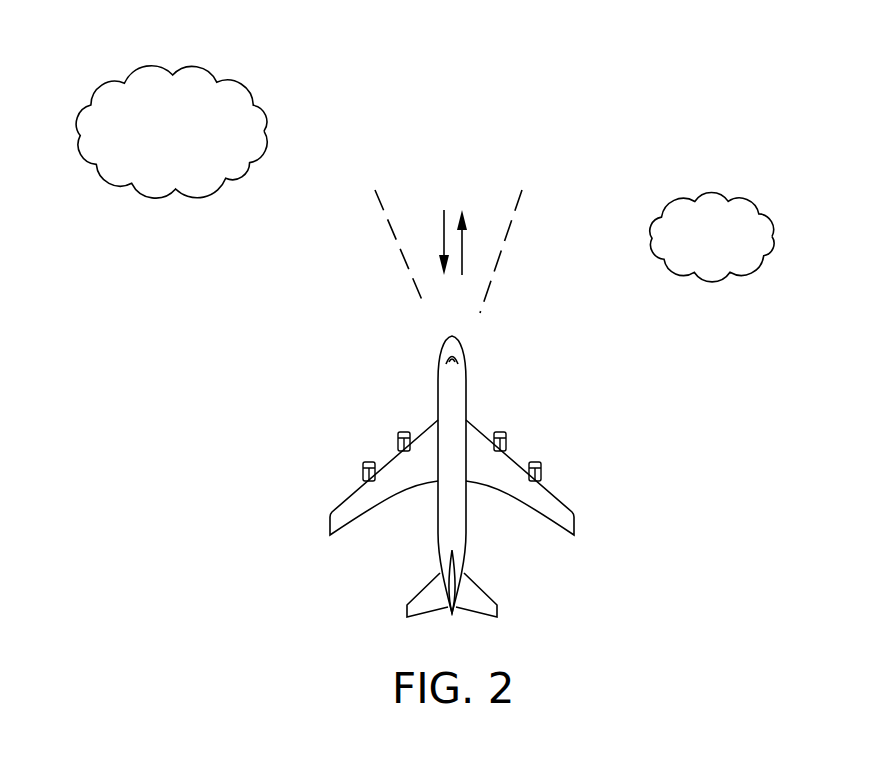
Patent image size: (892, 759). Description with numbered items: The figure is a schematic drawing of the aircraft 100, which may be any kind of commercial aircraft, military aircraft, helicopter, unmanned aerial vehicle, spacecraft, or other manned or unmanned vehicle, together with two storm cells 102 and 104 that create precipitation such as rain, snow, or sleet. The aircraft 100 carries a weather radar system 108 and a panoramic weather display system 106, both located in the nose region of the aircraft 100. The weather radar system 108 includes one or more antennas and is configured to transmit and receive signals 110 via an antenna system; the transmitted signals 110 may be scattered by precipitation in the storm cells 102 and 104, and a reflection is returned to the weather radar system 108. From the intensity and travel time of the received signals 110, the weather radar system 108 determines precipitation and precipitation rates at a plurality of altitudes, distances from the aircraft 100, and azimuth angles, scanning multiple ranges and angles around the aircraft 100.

The aircraft 100 is at (408, 378).
The storm cell 102 is at (211, 40).
The storm cell 104 is at (744, 168).
The panoramic weather display system 106 is at (452, 354).
The weather radar system 108 is at (451, 339).
The signals 110 is at (525, 171).